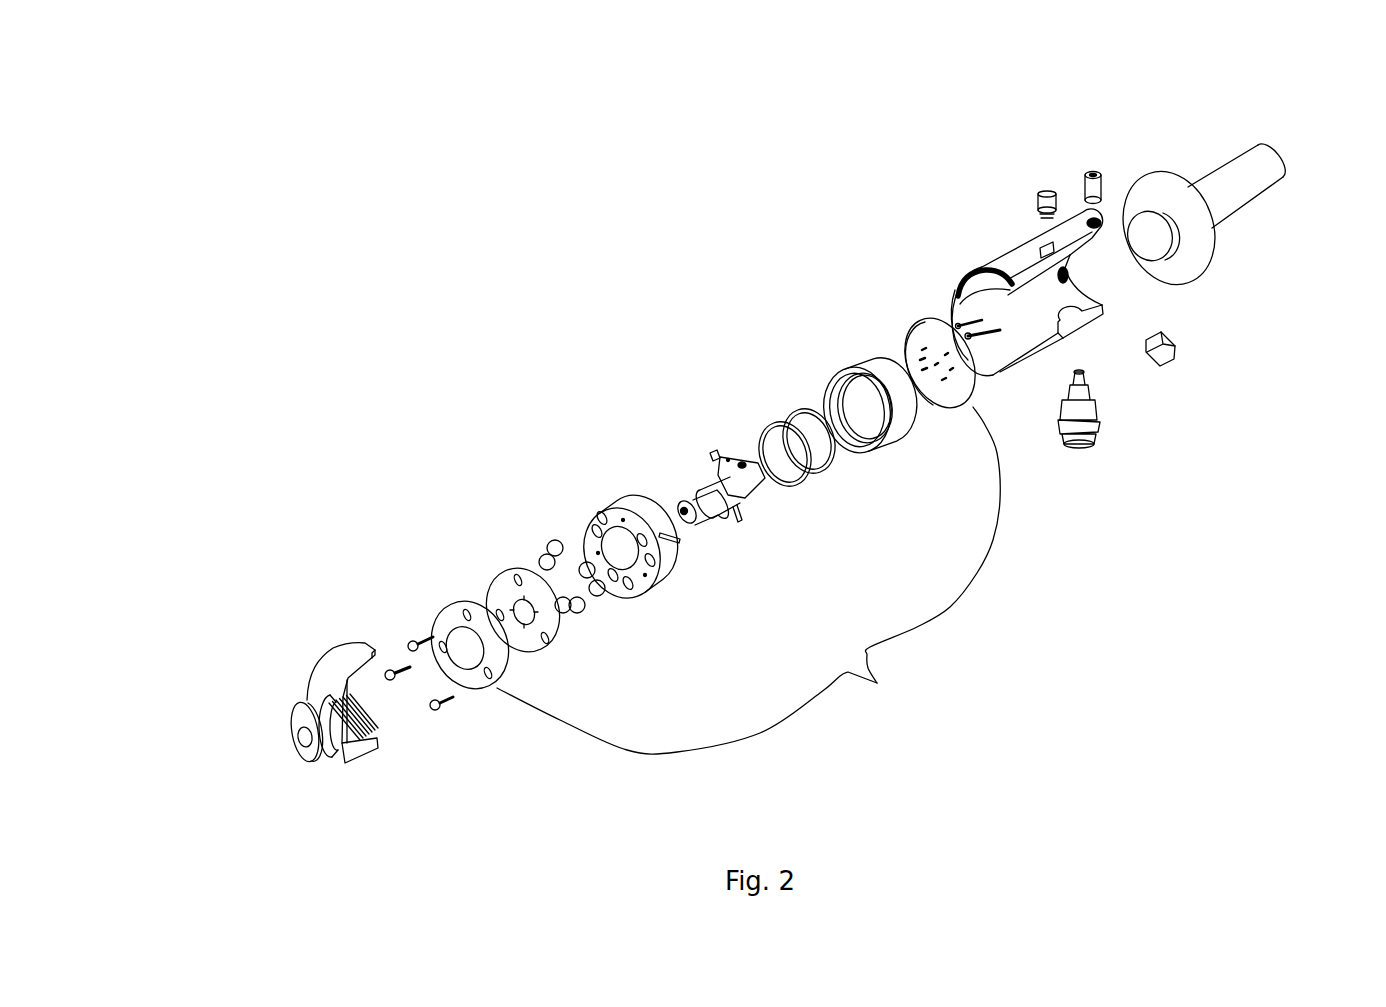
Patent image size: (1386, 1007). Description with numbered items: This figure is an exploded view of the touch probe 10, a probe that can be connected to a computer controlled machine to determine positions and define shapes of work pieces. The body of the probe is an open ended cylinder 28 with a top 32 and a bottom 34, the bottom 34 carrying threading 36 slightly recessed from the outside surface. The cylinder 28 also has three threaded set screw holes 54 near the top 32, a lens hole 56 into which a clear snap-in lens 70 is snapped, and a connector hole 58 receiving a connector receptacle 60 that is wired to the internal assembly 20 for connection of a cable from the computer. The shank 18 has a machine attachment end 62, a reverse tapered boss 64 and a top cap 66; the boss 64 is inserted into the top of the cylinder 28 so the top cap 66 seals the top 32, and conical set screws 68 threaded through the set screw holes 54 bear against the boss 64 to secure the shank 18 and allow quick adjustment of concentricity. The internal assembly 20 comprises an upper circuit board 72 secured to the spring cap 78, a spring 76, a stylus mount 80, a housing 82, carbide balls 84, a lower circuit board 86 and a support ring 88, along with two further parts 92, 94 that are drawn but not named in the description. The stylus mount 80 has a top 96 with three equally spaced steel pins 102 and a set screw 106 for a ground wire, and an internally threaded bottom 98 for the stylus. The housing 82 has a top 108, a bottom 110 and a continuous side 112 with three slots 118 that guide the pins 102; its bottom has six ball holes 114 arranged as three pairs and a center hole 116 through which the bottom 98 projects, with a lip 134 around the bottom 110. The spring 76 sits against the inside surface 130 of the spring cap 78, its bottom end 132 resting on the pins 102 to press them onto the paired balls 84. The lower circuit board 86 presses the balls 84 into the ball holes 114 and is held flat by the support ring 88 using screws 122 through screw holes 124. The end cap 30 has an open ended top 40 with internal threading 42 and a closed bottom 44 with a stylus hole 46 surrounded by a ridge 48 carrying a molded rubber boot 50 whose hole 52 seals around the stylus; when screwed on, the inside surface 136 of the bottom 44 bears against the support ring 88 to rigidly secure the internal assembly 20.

The touch probe 10 is at (375, 160).
The shank 18 is at (1230, 232).
The internal assembly 20 is at (748, 580).
The cylinder 28 is at (1018, 270).
The end cap 30 is at (330, 646).
The top 32 is at (1102, 313).
The bottom 34 is at (990, 378).
The threading 36 is at (960, 288).
The open ended top 40 is at (372, 645).
The internal threading 42 is at (380, 747).
The closed bottom 44 is at (160, 554).
The stylus hole 46 is at (330, 717).
The ridge 48 is at (340, 750).
The molded rubber boot 50 is at (287, 710).
The hole 52 is at (297, 737).
The set screw holes 54 is at (1215, 353).
The lens hole 56 is at (1015, 232).
The connector hole 58 is at (1078, 318).
The connector receptacle 60 is at (1103, 433).
The machine attachment end 62 is at (1238, 167).
The reverse tapered boss 64 is at (1136, 245).
The top cap 66 is at (1157, 172).
The conical set screws 68 is at (1180, 357).
The clear snap-in lens 70 is at (1036, 192).
The upper circuit board 72 is at (903, 320).
The spring 76 is at (778, 402).
The spring cap 78 is at (842, 353).
The stylus mount 80 is at (730, 447).
The housing 82 is at (600, 492).
The carbide balls 84 is at (547, 528).
The lower circuit board 86 is at (498, 562).
The support ring 88 is at (440, 595).
The disc 92 is at (952, 292).
The ring 94 is at (867, 352).
The top 96 is at (742, 447).
The bottom 98 is at (685, 502).
The steel pins 102 is at (697, 443).
The set screw 106 is at (748, 490).
The top 108 is at (668, 552).
The bottom 110 is at (648, 585).
The continuous side 112 is at (670, 585).
The ball holes 114 is at (600, 533).
The center hole 116 is at (617, 585).
The slots 118 is at (683, 541).
The screws 122 is at (457, 713).
The screw holes 124 is at (520, 575).
The inside surface 130 is at (870, 420).
The bottom end 132 is at (793, 487).
The lip 134 is at (613, 493).
The inside surface 136 is at (350, 750).